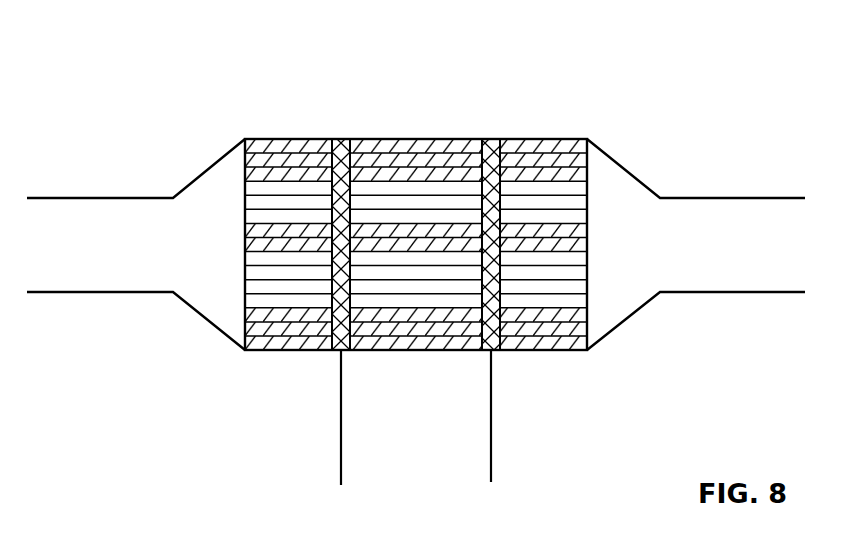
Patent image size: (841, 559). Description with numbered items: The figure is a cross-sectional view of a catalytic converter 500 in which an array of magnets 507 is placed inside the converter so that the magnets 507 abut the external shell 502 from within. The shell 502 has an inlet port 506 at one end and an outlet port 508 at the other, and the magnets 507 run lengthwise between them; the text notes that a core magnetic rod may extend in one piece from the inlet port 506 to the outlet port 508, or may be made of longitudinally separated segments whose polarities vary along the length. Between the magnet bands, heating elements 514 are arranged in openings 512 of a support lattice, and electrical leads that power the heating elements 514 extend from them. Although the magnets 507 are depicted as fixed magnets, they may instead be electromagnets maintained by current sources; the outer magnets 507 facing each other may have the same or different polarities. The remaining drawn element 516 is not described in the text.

The catalytic converter 500 is at (664, 49).
The external shell 502 is at (520, 137).
The inlet port 506 is at (722, 198).
The magnets 507 is at (283, 145).
The outlet port 508 is at (118, 198).
The openings 512 is at (352, 116).
The heating elements 514 is at (333, 268).
The sensor 516 is at (343, 422).